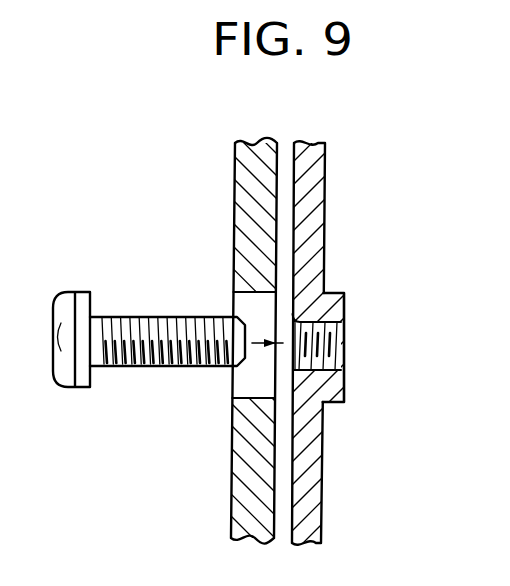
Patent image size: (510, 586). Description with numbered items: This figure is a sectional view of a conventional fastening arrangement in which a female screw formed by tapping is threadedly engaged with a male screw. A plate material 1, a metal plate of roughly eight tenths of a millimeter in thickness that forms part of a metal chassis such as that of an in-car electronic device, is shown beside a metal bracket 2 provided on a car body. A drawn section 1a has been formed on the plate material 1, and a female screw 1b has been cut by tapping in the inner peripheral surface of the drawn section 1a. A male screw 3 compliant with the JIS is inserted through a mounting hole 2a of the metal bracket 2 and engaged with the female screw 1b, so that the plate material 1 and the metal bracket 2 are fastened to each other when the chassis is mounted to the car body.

The plate material 1 is at (305, 462).
The drawn section 1a is at (328, 307).
The female screw 1b is at (333, 360).
The metal bracket 2 is at (248, 458).
The mounting hole 2a is at (245, 382).
The male screw 3 is at (152, 316).